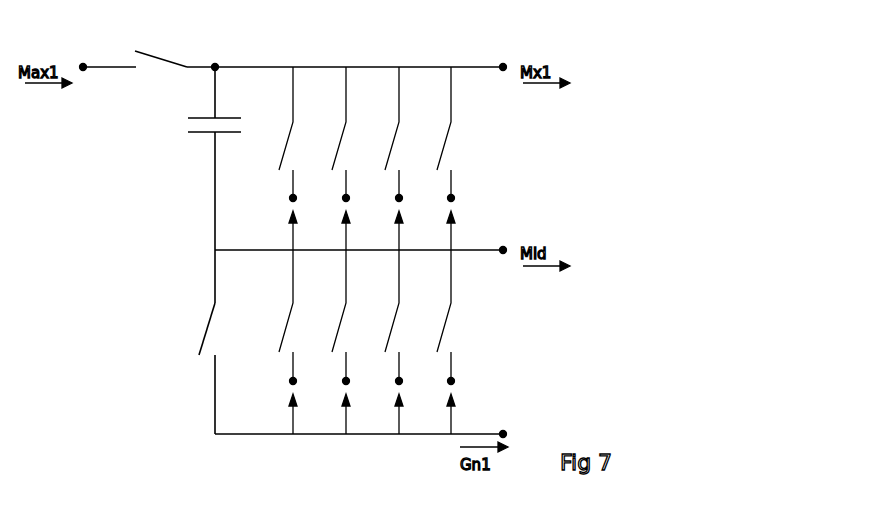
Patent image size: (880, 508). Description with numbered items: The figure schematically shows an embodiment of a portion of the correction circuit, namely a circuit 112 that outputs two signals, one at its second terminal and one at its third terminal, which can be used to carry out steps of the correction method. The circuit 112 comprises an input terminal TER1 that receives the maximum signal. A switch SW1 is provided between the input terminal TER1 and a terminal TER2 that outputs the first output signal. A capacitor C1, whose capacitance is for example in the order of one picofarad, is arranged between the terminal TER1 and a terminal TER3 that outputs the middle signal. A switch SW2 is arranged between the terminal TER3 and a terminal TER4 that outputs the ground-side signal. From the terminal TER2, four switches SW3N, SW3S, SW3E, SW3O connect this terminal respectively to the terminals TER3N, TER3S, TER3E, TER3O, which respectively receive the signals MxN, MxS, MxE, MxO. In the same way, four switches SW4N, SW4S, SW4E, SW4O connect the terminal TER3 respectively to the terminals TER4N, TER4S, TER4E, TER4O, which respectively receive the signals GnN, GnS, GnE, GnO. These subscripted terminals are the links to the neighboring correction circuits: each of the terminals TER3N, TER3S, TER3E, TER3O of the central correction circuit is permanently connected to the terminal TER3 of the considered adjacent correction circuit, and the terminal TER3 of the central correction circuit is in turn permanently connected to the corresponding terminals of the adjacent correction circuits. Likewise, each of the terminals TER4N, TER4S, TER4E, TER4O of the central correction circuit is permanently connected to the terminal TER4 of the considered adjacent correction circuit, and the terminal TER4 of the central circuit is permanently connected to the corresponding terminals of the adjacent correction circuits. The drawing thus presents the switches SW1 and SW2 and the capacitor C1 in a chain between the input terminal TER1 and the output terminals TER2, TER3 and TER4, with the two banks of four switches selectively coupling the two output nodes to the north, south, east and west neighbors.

The circuit 112 is at (100, 229).
The input terminal TER1 is at (83, 64).
The terminal TER2 is at (503, 64).
The terminal TER3 is at (503, 247).
The terminal TER4 is at (503, 431).
The switch SW1 is at (164, 56).
The switch SW2 is at (201, 324).
The capacitor C1 is at (202, 133).
The switch SW3N is at (279, 139).
The switch SW3S is at (332, 139).
The switch SW3E is at (385, 139).
The switch SW3O is at (437, 139).
The switch SW4N is at (279, 320).
The switch SW4S is at (332, 320).
The switch SW4E is at (385, 320).
The switch SW4O is at (437, 320).
The terminal TER3N is at (291, 198).
The terminal TER3S is at (344, 198).
The terminal TER3E is at (397, 198).
The terminal TER3O is at (449, 198).
The terminal TER4N is at (291, 381).
The terminal TER4S is at (344, 381).
The terminal TER4E is at (397, 381).
The terminal TER4O is at (449, 381).
The signal MxN is at (289, 226).
The signal MxS is at (342, 226).
The signal MxE is at (395, 226).
The signal MxO is at (447, 226).
The signal GnN is at (289, 410).
The signal GnS is at (342, 410).
The signal GnE is at (395, 410).
The signal GnO is at (447, 410).